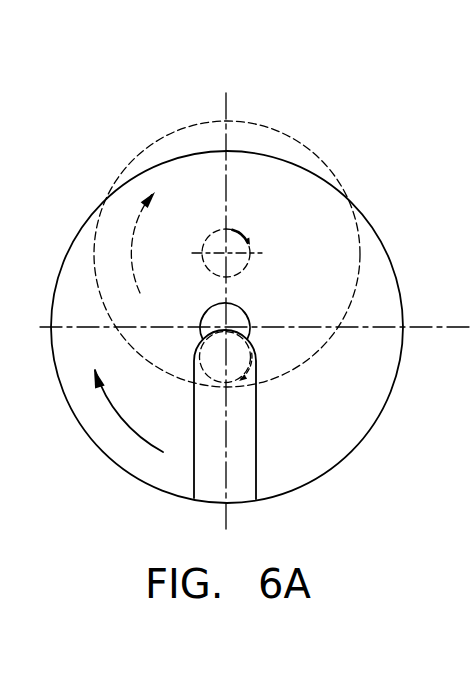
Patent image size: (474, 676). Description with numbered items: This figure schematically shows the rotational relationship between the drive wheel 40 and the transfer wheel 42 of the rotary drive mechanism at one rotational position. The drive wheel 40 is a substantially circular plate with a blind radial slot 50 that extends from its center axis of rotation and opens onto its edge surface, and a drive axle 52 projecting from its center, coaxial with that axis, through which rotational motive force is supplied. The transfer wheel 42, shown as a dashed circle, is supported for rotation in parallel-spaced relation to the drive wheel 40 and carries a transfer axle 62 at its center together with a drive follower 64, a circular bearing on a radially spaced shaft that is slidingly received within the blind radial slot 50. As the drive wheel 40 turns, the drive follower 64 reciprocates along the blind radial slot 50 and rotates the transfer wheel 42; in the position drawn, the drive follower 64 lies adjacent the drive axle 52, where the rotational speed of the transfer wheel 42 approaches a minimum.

The drive wheel 40 is at (373, 393).
The transfer wheel 42 is at (275, 130).
The blind radial slot 50 is at (255, 473).
The drive axle 52 is at (232, 304).
The transfer axle 62 is at (250, 253).
The drive follower 64 is at (183, 382).